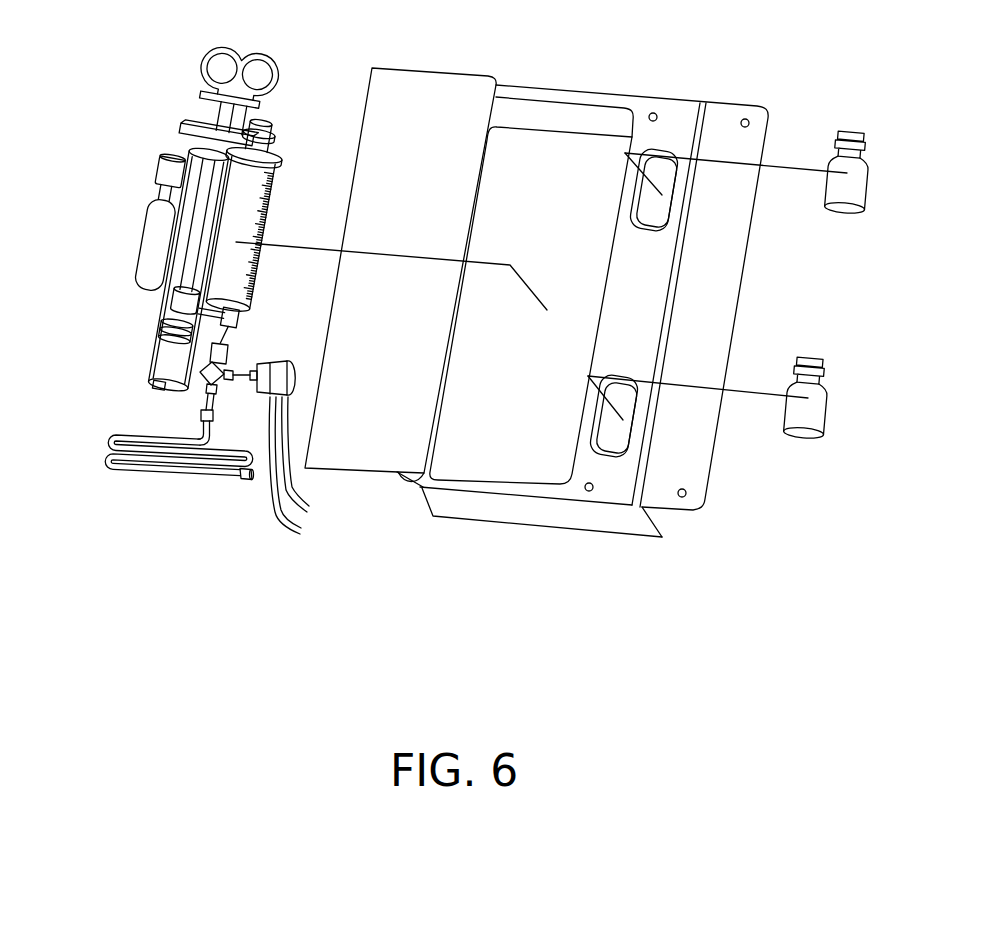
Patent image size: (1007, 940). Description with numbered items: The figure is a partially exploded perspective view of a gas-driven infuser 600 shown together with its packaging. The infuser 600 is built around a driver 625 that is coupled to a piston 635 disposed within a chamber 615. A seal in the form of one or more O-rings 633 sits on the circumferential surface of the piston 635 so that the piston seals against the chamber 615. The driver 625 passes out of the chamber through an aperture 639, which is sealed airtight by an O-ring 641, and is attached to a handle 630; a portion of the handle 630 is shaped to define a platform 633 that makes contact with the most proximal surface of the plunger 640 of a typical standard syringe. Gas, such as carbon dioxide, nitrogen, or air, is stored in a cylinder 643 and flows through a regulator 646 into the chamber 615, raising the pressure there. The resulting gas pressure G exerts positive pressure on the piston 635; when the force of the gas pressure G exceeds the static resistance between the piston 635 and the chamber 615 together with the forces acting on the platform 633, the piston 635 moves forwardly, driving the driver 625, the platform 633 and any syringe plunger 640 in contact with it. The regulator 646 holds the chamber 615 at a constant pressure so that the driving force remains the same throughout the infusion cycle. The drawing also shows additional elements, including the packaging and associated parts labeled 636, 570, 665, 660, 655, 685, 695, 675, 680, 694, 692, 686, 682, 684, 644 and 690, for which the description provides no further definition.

The infuser 600 is at (160, 395).
The handle 630 is at (276, 60).
The O-rings 633 is at (284, 95).
The driver 625 is at (213, 130).
The plunger 640 is at (272, 138).
The O-ring 641 is at (180, 133).
The regulator 646 is at (152, 172).
The cylinder 643 is at (157, 227).
The aperture 639 is at (203, 155).
The piston 635 is at (173, 342).
The chamber 615 is at (153, 355).
The fitting 636 is at (157, 385).
The coiled tubing 570 is at (150, 466).
The tray lip 665 is at (305, 472).
The connector 660 is at (291, 442).
The tubing 655 is at (309, 473).
The tray 685 is at (420, 82).
The panel 695 is at (503, 147).
The bracket assembly 675 is at (582, 77).
The back plate 680 is at (690, 102).
The slots 694 is at (627, 373).
The vials 692 is at (800, 362).
The mounting hole 686 is at (686, 496).
The fold 682 is at (646, 509).
The mounting hole 684 is at (591, 491).
The bottom flange 644 is at (520, 513).
The bottom wall 690 is at (537, 491).
The gas pressure G is at (203, 245).